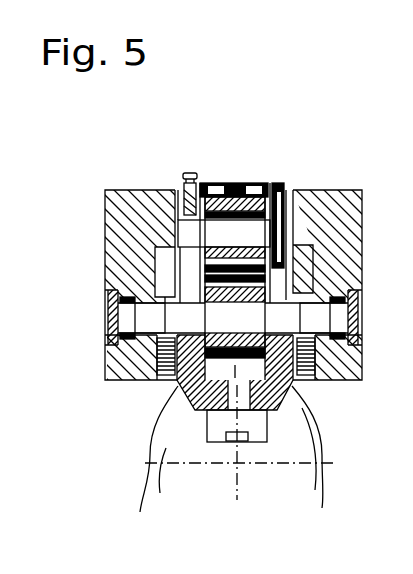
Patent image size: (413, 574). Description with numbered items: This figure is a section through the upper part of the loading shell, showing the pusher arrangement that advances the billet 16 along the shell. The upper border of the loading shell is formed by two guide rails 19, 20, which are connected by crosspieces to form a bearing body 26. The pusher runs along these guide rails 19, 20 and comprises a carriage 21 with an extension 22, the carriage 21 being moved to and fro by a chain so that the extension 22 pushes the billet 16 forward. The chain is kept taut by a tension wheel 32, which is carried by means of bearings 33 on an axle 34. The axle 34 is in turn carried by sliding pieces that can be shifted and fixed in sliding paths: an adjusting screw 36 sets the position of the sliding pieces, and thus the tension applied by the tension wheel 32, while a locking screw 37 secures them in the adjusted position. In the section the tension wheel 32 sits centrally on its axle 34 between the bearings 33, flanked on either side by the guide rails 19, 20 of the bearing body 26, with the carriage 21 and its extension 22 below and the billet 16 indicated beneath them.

The billet 16 is at (162, 450).
The guide rail 19 is at (165, 380).
The guide rail 20 is at (305, 380).
The carriage 21 is at (277, 400).
The extension 22 is at (222, 430).
The bearing body 26 is at (248, 150).
The tension wheel 32 is at (231, 183).
The bearings 33 is at (212, 182).
The axle 34 is at (207, 236).
The adjusting screw 36 is at (284, 183).
The locking screw 37 is at (187, 174).